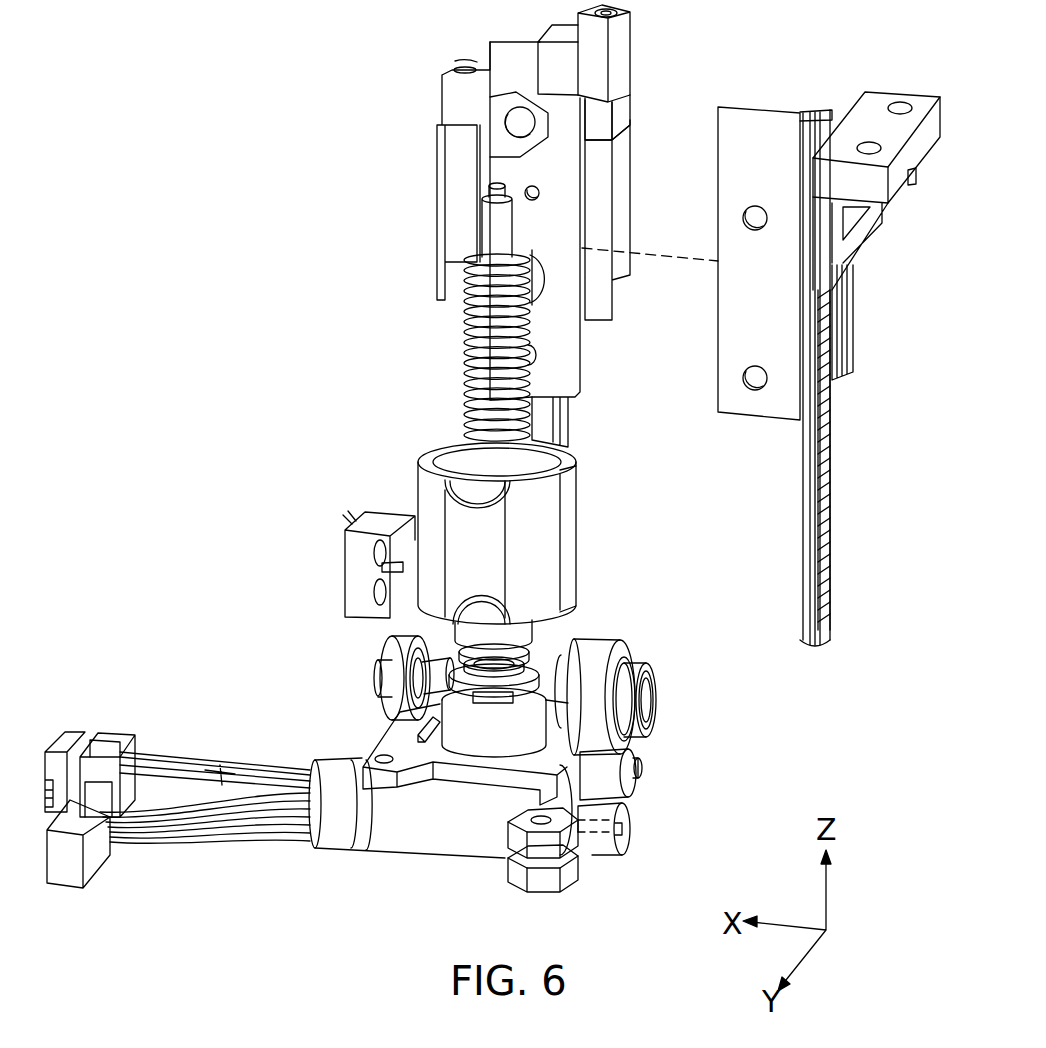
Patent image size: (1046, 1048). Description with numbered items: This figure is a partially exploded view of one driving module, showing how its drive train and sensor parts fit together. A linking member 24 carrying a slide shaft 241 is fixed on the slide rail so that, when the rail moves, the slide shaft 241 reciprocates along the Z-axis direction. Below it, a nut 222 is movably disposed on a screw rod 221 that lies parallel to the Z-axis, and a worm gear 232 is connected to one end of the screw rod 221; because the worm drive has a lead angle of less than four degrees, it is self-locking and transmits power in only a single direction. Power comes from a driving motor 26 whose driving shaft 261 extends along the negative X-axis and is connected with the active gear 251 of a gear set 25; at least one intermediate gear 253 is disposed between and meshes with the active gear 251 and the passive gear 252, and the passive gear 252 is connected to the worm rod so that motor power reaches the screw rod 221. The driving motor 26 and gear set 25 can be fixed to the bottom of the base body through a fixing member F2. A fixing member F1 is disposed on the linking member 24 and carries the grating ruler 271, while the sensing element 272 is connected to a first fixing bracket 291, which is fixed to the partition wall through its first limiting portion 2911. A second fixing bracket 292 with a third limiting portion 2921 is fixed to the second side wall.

The linking member 24 is at (560, 348).
The slide shaft 241 is at (605, 57).
The screw rod 221 is at (466, 332).
The nut 222 is at (455, 452).
The worm gear 232 is at (480, 750).
The gear set 25 is at (90, 158).
The active gear 251 is at (630, 828).
The passive gear 252 is at (597, 642).
The intermediate gear 253 is at (628, 790).
The driving motor 26 is at (415, 835).
The driving shaft 261 is at (592, 835).
The grating ruler 271 is at (830, 495).
The sensing element 272 is at (853, 303).
The first fixing bracket 291 is at (878, 96).
The first limiting portion 2911 is at (917, 178).
The second fixing bracket 292 is at (350, 582).
The third limiting portion 2921 is at (392, 560).
The fixing member F1 is at (738, 150).
The fixing member F2 is at (400, 745).